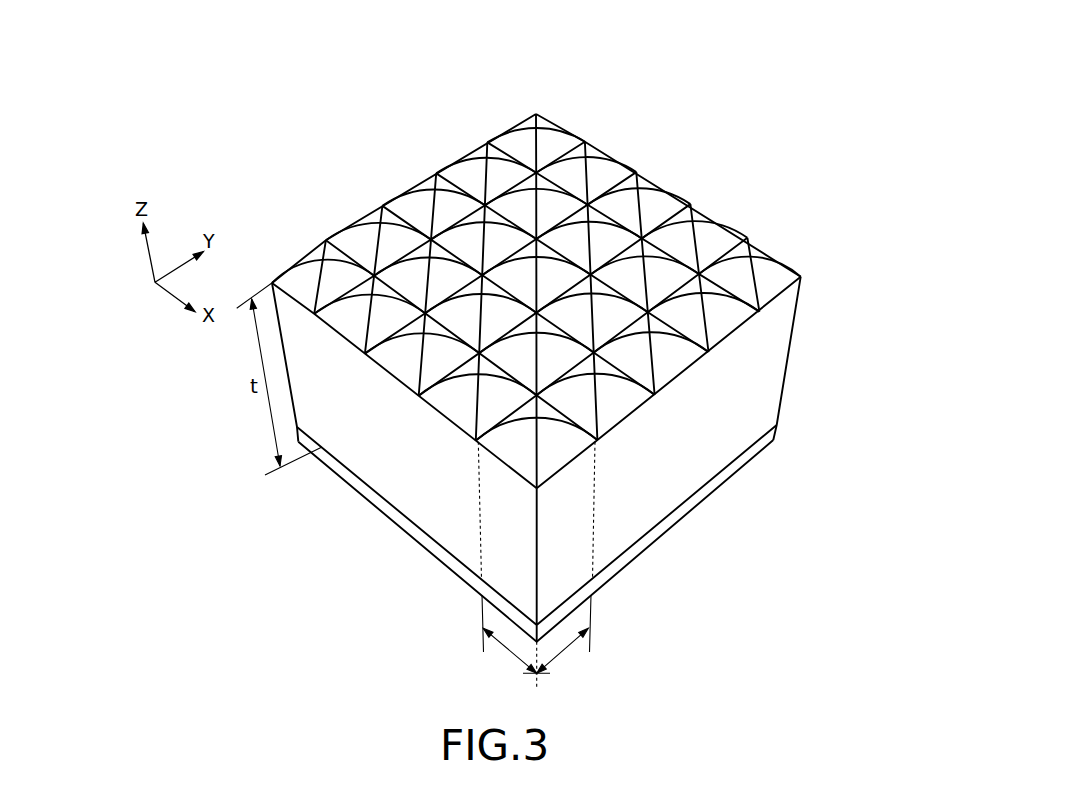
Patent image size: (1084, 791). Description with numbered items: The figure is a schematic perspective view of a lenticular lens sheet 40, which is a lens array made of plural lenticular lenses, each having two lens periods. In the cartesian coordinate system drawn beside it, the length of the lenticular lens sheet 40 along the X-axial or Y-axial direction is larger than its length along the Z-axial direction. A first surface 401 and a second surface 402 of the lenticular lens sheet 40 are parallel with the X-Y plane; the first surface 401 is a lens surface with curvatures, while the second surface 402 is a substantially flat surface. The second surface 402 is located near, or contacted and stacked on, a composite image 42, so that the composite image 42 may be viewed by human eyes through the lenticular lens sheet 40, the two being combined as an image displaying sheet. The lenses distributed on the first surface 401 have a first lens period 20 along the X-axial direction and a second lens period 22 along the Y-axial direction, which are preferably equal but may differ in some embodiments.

The lenticular lens sheet 40 is at (747, 155).
The first surface 401 is at (766, 242).
The composite image 42 is at (755, 450).
The second surface 402 is at (716, 479).
The first lens period 20 is at (507, 560).
The second lens period 22 is at (559, 565).